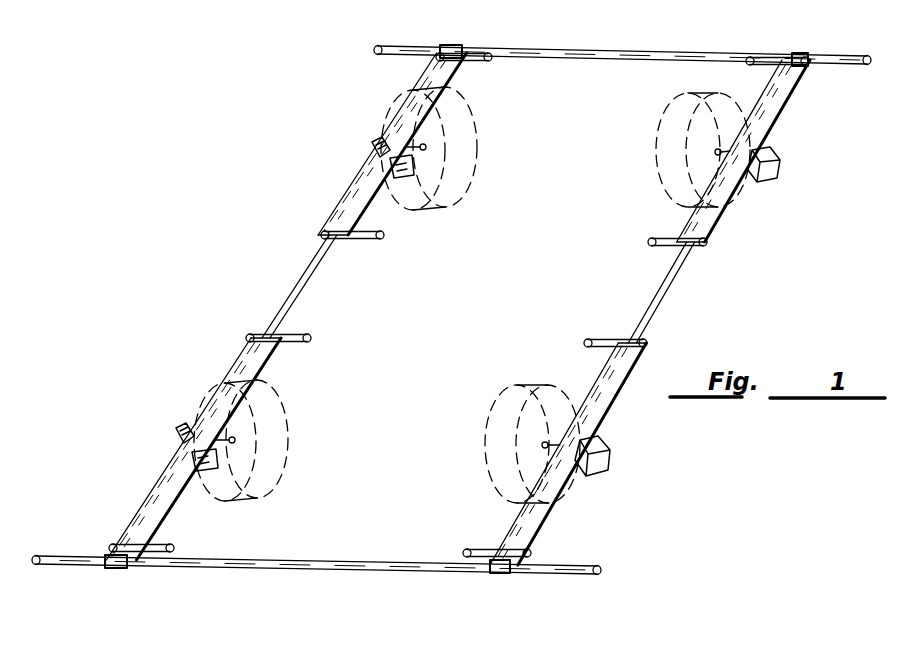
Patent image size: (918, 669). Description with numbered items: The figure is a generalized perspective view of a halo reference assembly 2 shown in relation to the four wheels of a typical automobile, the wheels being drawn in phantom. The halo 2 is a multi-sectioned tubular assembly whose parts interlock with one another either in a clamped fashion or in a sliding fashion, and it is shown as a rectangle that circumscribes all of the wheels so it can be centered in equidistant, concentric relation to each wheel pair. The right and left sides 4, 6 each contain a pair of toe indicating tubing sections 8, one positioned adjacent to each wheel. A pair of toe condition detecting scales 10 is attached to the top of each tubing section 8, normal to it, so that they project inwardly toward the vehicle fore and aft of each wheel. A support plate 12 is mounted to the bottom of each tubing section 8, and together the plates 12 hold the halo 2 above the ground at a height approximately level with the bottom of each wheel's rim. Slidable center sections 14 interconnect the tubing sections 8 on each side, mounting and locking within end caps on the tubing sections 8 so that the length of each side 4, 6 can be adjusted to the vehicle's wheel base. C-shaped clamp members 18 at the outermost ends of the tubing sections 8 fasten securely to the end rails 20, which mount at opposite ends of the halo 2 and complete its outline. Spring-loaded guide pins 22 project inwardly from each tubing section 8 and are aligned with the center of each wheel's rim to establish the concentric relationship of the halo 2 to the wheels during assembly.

The halo reference assembly 2 is at (306, 136).
The right side 4 is at (670, 318).
The left side 6 is at (283, 284).
The toe indicating tubing section 8 is at (352, 197).
The toe condition detecting scale 10 is at (475, 61).
The support plate 12 is at (380, 150).
The slidable center section 14 is at (305, 285).
The C-shaped clamp member 18 is at (455, 47).
The end rail 20 is at (598, 48).
The spring-loaded guide pin 22 is at (428, 150).